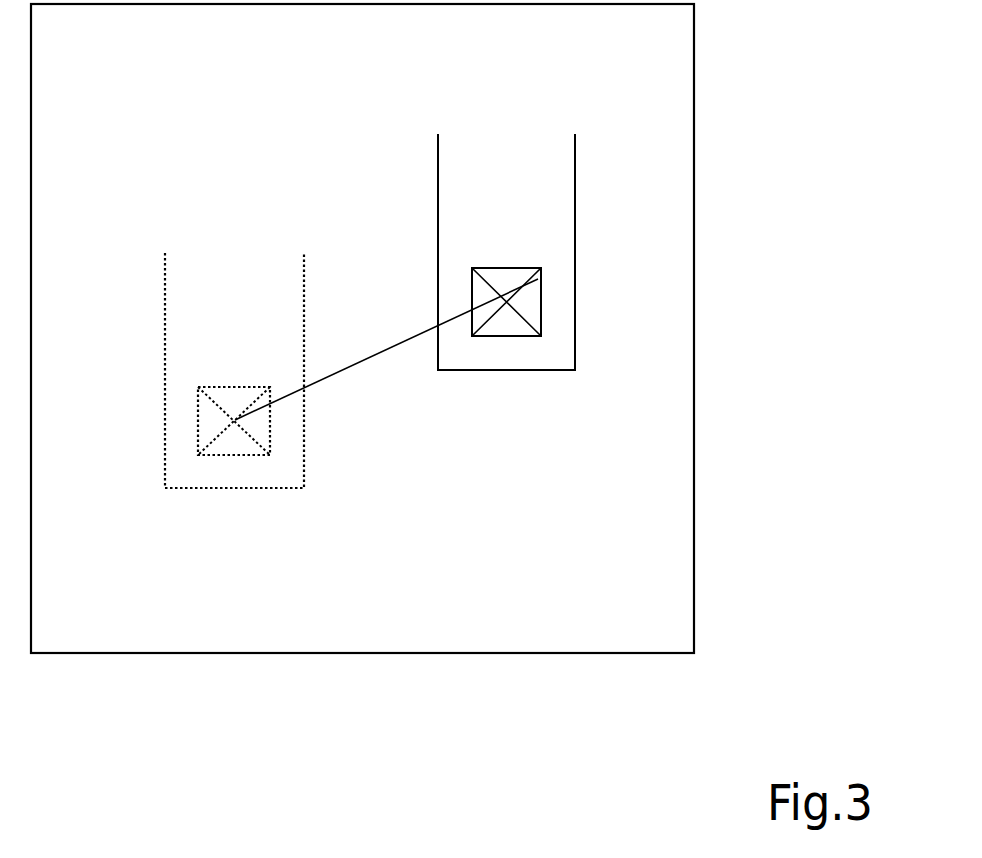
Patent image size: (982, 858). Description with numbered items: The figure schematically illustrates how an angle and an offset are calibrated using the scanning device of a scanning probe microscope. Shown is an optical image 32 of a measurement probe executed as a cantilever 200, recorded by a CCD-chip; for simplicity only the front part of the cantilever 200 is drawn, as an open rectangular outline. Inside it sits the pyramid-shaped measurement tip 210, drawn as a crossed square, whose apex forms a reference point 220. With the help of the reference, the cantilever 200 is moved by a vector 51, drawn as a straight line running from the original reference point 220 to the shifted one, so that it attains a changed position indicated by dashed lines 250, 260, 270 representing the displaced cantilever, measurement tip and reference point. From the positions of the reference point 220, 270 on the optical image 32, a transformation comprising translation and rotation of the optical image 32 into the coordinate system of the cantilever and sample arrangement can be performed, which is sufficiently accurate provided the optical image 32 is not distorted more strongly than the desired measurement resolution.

The optical image 32 is at (694, 62).
The cantilever 200 is at (577, 160).
The reference point 220 is at (542, 273).
The measurement tip 210 is at (530, 313).
The vector 51 is at (337, 378).
The dashed lines 250 is at (165, 268).
The dashed lines 270 is at (240, 420).
The dashed lines 260 is at (228, 445).